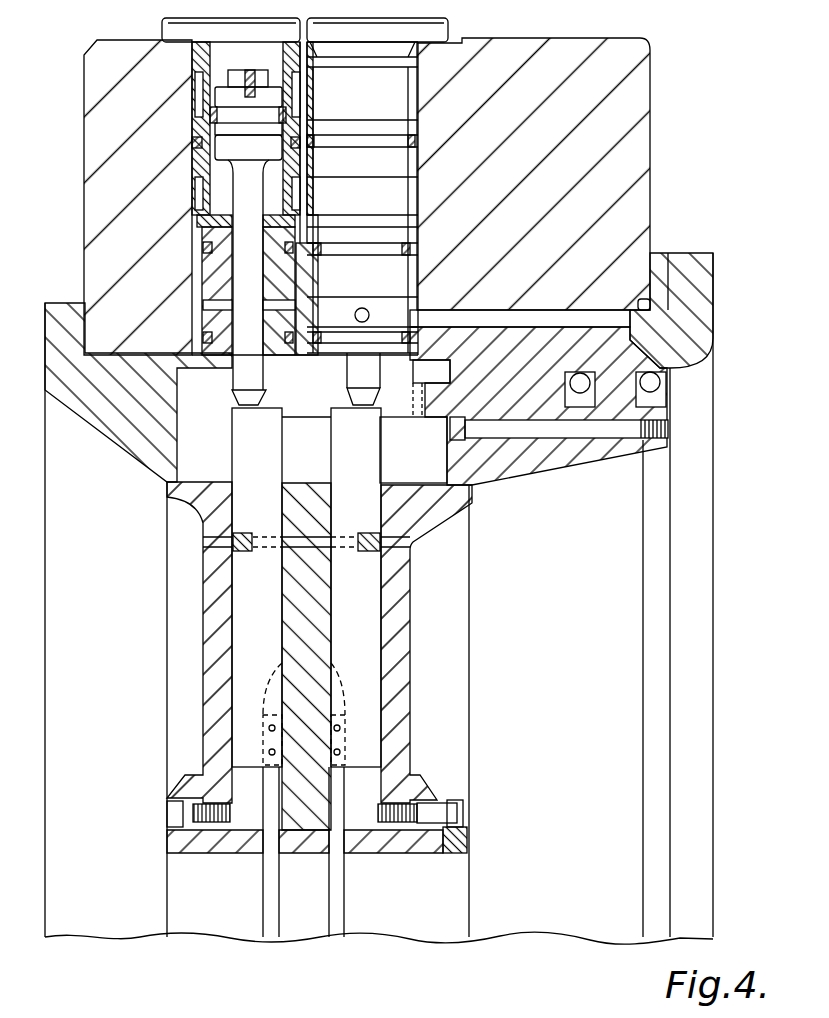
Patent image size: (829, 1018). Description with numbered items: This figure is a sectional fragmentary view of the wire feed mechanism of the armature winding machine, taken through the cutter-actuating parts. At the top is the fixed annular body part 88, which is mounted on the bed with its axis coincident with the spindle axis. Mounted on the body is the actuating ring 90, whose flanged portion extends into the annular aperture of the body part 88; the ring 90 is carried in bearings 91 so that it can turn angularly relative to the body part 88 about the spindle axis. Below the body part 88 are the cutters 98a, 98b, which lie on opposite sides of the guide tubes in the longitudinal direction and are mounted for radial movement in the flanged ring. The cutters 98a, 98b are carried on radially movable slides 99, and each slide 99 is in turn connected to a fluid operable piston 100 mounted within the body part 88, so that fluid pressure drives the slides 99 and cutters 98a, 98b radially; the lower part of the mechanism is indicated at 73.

The body part 88 is at (607, 85).
The actuating ring 90 is at (590, 458).
The bearings 91 is at (653, 381).
The slides 99 is at (352, 448).
The fluid operable pistons 100 is at (358, 370).
The cutters 98a is at (258, 833).
The cutters 98b is at (333, 828).
The cylinder wall 73 is at (556, 729).